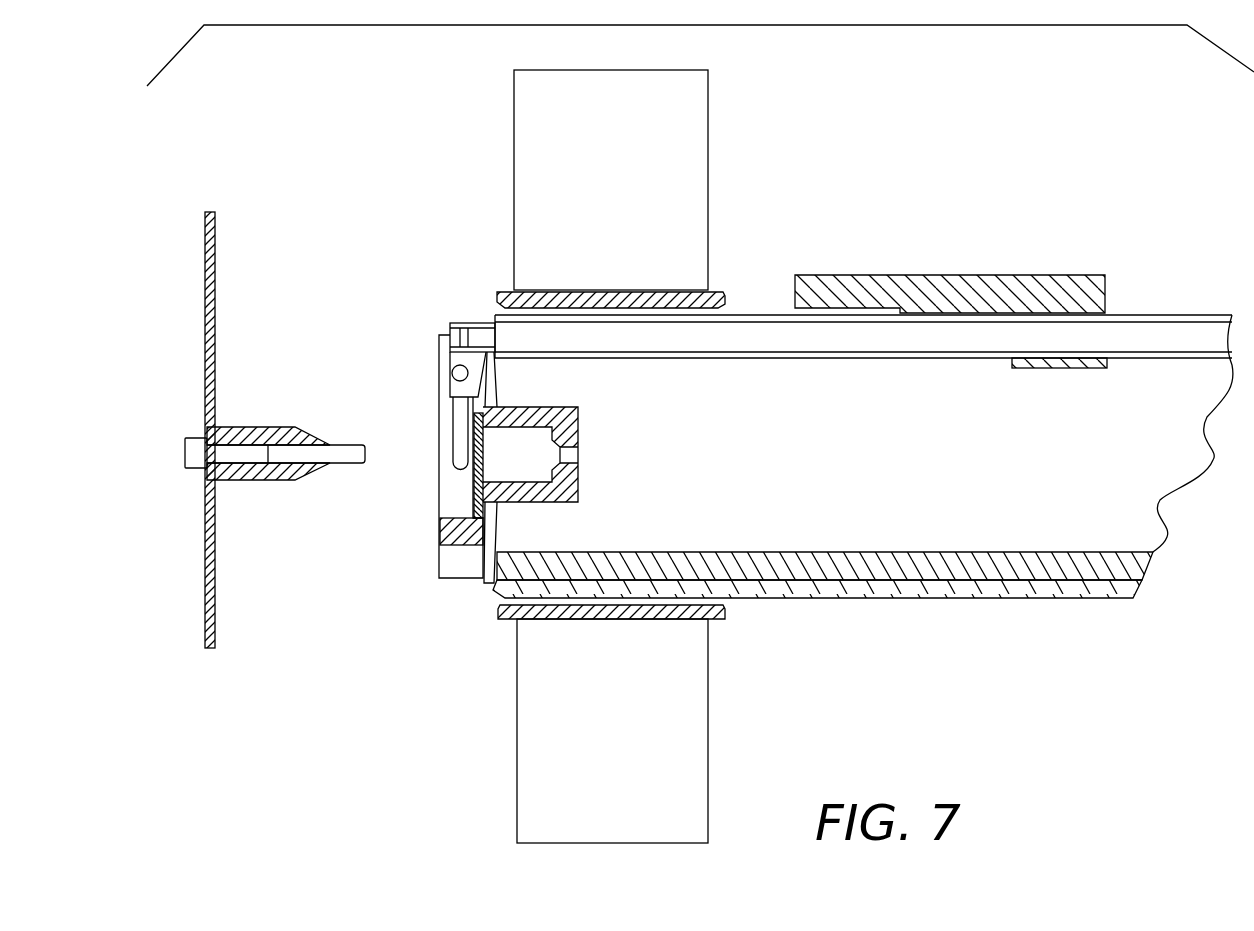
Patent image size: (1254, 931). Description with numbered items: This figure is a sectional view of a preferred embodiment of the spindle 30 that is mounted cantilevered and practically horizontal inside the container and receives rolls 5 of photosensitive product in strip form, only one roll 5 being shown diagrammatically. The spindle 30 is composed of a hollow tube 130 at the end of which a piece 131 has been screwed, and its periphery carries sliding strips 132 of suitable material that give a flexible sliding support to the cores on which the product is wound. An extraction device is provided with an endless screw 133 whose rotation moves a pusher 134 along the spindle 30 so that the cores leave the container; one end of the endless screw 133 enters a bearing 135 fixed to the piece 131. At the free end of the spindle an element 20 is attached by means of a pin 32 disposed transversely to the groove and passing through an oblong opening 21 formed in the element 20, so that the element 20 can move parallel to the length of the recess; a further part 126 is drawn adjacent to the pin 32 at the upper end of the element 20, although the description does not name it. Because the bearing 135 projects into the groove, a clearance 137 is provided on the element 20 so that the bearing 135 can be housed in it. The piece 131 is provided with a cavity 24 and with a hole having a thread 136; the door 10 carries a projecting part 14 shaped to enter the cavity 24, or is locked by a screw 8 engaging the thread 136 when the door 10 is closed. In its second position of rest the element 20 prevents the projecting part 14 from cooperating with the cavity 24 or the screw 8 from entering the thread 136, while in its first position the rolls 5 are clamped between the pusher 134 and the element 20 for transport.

The roll 5 is at (723, 290).
The screw 8 is at (187, 438).
The door 10 is at (215, 565).
The projecting part 14 is at (251, 478).
The element 20 is at (438, 520).
The oblong opening 21 is at (460, 438).
The cavity 24 is at (532, 470).
The spindle 30 is at (910, 577).
The pin 32 is at (452, 377).
The bracket 126 is at (445, 358).
The hollow tube 130 is at (947, 552).
The piece 131 is at (853, 427).
The sliding strip 132 is at (1033, 587).
The endless screw 133 is at (667, 340).
The pusher 134 is at (912, 275).
The bearing 135 is at (472, 323).
The thread 136 is at (570, 455).
The clearance 137 is at (453, 507).